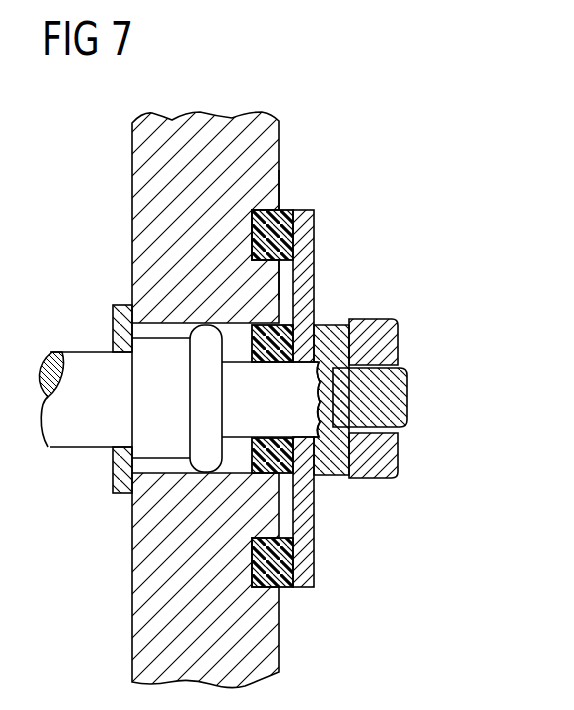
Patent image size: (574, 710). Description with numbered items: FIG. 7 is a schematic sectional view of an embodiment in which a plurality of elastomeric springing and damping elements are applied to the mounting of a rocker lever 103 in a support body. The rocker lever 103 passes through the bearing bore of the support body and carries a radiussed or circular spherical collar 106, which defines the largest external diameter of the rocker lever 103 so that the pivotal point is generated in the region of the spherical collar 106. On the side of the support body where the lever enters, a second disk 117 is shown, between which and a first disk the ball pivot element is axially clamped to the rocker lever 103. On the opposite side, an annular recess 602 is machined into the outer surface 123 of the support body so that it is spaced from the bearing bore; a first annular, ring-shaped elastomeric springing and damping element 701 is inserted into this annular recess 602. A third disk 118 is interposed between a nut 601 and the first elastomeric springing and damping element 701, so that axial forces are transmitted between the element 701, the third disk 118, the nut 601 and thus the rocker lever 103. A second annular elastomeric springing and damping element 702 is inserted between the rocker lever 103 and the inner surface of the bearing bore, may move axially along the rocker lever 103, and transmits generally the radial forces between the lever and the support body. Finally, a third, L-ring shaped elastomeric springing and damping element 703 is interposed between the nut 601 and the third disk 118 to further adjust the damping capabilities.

The rocker lever 103 is at (88, 362).
The spherical collar 106 is at (207, 335).
The second disk 117 is at (113, 473).
The third disk 118 is at (305, 282).
The outer surface 123 is at (280, 629).
The nut 601 is at (385, 447).
The annular recess 602 is at (265, 207).
The first elastomeric springing and damping element 701 is at (282, 235).
The second elastomeric springing and damping element 702 is at (273, 350).
The third elastomeric springing and damping element 703 is at (332, 463).